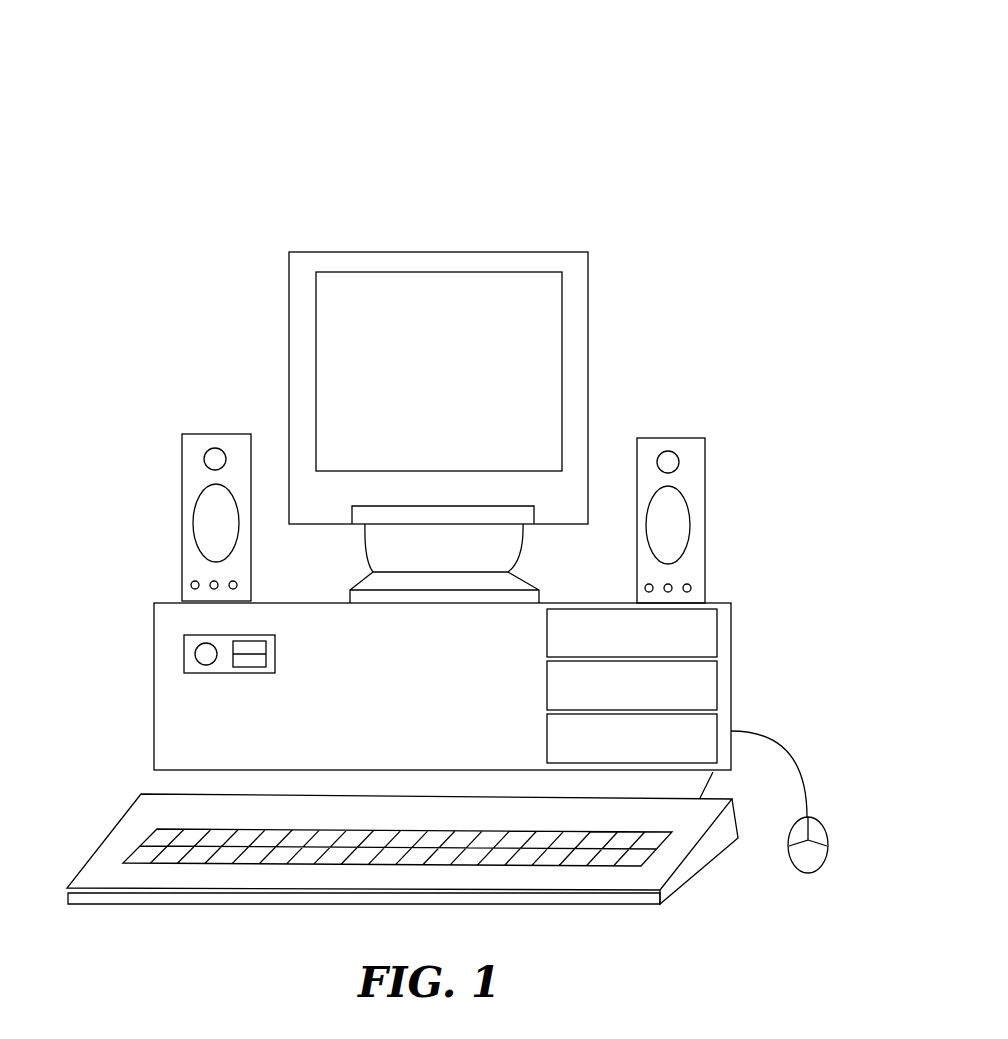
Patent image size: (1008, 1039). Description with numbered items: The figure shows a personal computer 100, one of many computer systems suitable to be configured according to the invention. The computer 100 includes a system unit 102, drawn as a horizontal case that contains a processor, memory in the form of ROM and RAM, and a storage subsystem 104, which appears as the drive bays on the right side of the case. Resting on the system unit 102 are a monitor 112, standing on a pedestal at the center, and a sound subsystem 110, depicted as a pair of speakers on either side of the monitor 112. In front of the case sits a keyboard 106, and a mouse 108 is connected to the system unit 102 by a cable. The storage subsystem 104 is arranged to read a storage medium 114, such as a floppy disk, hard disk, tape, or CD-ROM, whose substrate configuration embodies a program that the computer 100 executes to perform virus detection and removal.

The personal computer 100 is at (288, 142).
The system unit 102 is at (516, 658).
The storage subsystem 104 is at (712, 723).
The keyboard 106 is at (128, 812).
The mouse 108 is at (817, 862).
The sound subsystem 110 is at (705, 480).
The monitor 112 is at (588, 423).
The storage medium 114 is at (695, 740).